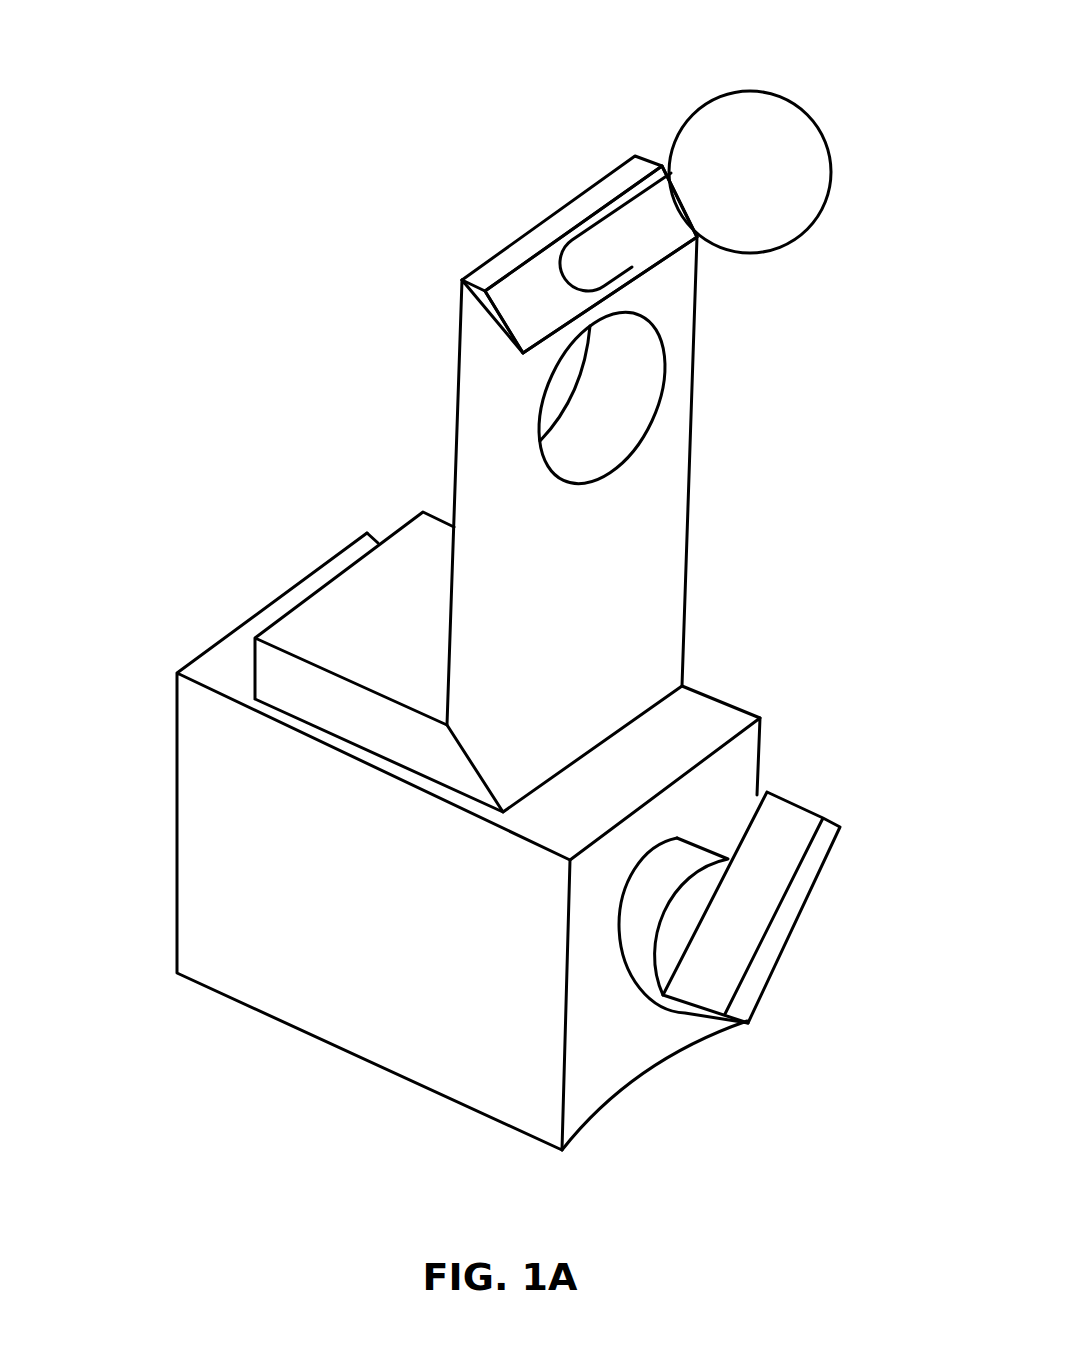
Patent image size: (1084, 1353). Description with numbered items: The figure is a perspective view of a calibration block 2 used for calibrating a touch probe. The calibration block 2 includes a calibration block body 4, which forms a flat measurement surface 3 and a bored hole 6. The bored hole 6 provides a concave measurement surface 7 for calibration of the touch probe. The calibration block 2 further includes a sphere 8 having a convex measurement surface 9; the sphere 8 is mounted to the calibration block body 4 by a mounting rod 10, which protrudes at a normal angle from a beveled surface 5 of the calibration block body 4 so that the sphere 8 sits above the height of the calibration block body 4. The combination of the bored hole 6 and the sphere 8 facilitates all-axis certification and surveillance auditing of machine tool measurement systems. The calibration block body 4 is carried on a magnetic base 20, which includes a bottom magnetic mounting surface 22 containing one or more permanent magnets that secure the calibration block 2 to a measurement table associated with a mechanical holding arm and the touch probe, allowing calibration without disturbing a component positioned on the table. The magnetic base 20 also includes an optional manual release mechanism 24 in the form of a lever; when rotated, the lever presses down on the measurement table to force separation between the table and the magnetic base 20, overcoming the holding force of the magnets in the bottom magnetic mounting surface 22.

The calibration block 2 is at (485, 577).
The flat measurement surface 3 is at (665, 540).
The calibration block body 4 is at (587, 593).
The beveled surface 5 is at (529, 311).
The bored hole 6 is at (427, 343).
The concave measurement surface 7 is at (604, 416).
The sphere 8 is at (745, 190).
The convex measurement surface 9 is at (810, 142).
The mounting rod 10 is at (607, 256).
The magnetic base 20 is at (355, 910).
The bottom magnetic mounting surface 22 is at (306, 1083).
The manual release mechanism 24 is at (725, 931).